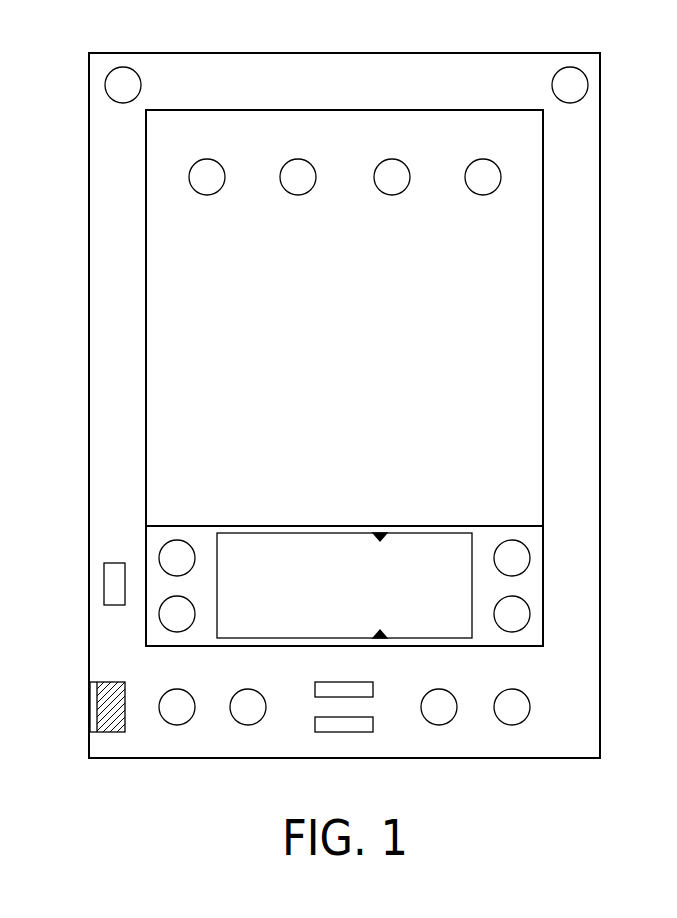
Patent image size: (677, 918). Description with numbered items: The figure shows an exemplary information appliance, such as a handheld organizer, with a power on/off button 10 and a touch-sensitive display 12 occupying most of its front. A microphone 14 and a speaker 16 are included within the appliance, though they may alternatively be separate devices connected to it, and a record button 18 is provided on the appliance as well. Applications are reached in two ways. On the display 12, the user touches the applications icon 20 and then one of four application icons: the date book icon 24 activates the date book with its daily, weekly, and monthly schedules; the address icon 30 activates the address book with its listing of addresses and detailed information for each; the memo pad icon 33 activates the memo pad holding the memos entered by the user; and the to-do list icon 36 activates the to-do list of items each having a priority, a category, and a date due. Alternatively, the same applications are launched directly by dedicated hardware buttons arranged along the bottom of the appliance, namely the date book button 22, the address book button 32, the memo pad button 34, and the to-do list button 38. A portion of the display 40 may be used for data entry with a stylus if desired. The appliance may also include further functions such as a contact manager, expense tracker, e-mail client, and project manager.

The power on/off button 10 is at (100, 712).
The touch-sensitive display 12 is at (353, 371).
The microphone 14 is at (112, 88).
The speaker 16 is at (580, 88).
The record button 18 is at (112, 590).
The applications icon 20 is at (181, 548).
The date book button 22 is at (182, 716).
The date book icon 24 is at (212, 185).
The address icon 30 is at (488, 185).
The address book button 32 is at (517, 716).
The memo pad icon 33 is at (303, 185).
The memo pad button 34 is at (253, 716).
The to-do list icon 36 is at (397, 185).
The to-do list button 38 is at (444, 716).
The portion of the display 40 is at (318, 548).